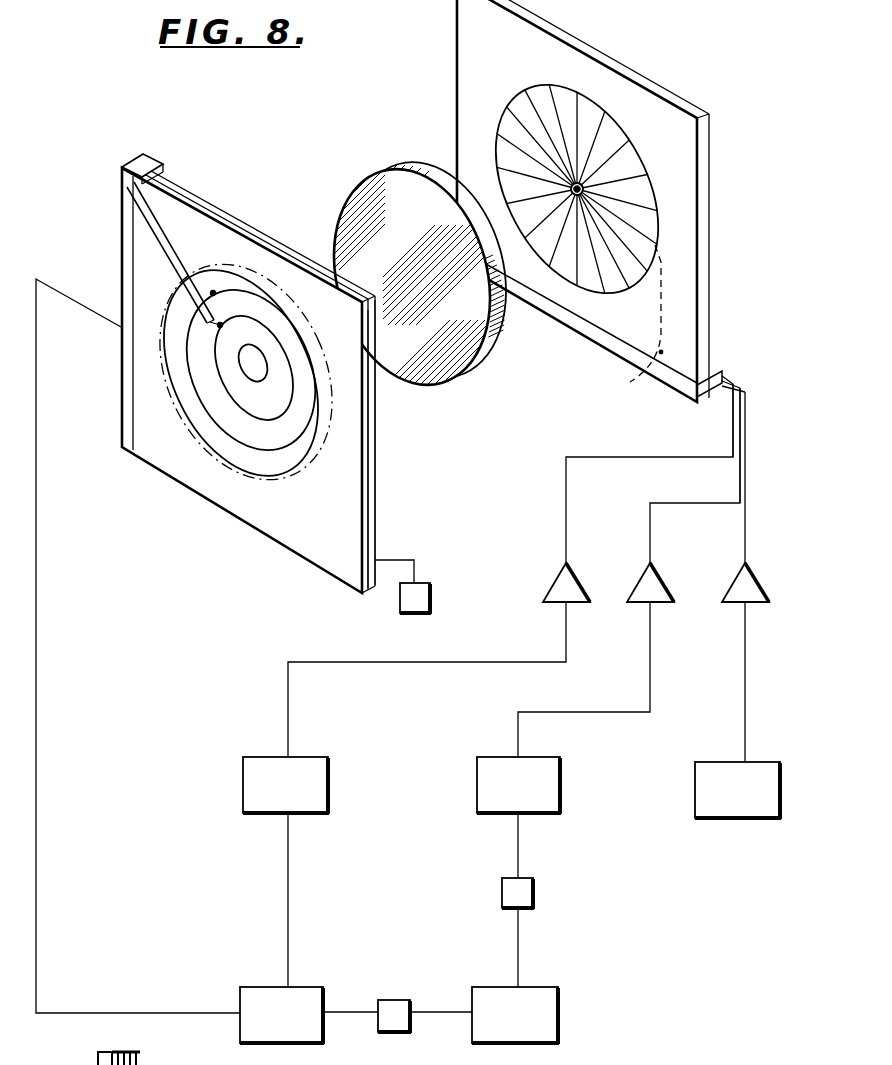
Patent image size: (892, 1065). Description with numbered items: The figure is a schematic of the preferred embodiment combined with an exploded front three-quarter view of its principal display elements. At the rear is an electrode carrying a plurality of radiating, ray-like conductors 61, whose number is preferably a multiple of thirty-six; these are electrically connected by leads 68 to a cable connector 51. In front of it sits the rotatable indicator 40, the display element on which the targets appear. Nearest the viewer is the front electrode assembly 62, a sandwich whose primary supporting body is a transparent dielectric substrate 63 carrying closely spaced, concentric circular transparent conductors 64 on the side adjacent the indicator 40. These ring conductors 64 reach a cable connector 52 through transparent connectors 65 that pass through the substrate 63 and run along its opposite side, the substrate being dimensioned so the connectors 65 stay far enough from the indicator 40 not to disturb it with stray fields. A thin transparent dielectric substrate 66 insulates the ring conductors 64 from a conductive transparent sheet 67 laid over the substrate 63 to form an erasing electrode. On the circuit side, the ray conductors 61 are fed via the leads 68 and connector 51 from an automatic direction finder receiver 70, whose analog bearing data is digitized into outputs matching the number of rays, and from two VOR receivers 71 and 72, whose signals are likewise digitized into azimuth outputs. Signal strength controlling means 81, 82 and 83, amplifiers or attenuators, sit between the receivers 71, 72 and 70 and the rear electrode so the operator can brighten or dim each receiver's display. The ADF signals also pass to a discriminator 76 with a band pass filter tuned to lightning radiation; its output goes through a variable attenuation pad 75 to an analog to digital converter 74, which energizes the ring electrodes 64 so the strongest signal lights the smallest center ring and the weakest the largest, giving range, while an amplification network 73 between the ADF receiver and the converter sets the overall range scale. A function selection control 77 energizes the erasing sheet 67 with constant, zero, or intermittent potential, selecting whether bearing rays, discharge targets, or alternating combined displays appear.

The rotatable indicator 40 is at (496, 360).
The cable connector 51 is at (725, 380).
The cable connector 52 is at (153, 162).
The radiating conductors 61 is at (616, 170).
The front electrode assembly 62 is at (125, 272).
The transparent dielectric substrate 63 is at (194, 491).
The circular transparent conductors 64 is at (199, 290).
The transparent connectors 65 is at (147, 220).
The thin transparent dielectric substrate 66 is at (376, 520).
The conductive transparent sheet 67 is at (370, 472).
The leads 68 is at (629, 380).
The automatic direction finder receiver 70 is at (562, 769).
The VOR receiver 71 is at (329, 762).
The VOR receiver 72 is at (695, 793).
The amplification network 73 is at (534, 893).
The analog to digital converter 74 is at (324, 1001).
The variable attenuation pad 75 is at (411, 1003).
The discriminator 76 is at (559, 1003).
The function selection control 77 is at (432, 600).
The signal strength controlling means 81 is at (578, 577).
The signal strength controlling means 82 is at (662, 577).
The signal strength controlling means 83 is at (758, 579).